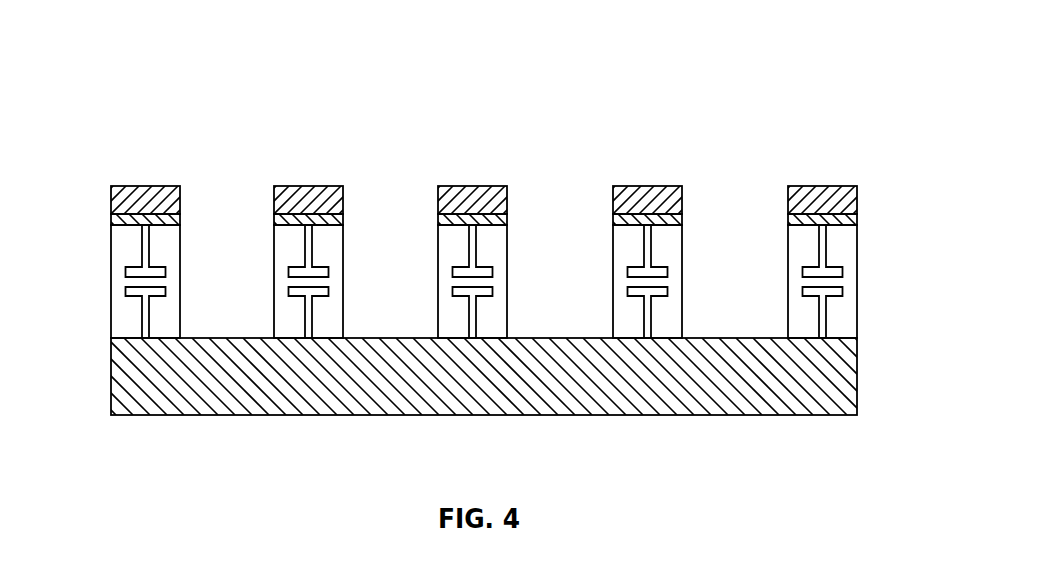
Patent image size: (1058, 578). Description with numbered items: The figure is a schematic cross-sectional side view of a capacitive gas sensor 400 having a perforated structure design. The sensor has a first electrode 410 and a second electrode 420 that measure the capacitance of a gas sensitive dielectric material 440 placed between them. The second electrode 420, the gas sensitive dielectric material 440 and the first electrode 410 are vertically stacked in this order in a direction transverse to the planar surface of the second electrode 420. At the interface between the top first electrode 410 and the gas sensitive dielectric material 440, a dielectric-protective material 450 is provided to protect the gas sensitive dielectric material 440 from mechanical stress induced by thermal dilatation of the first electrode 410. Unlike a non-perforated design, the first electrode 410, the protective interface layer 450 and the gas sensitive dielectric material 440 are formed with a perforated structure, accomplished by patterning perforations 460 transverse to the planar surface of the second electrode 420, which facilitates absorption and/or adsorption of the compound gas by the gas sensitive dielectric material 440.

The capacitive gas sensor 400 is at (476, 264).
The first electrode 410 is at (125, 185).
The second electrode 420 is at (158, 395).
The gas sensitive dielectric material 440 is at (120, 313).
The dielectric-protective material 450 is at (111, 220).
The perforations 460 is at (220, 212).